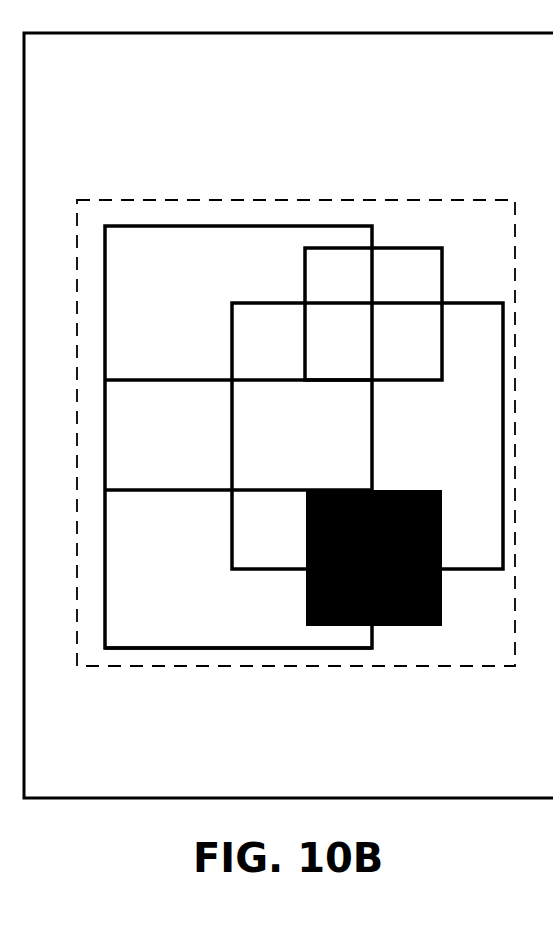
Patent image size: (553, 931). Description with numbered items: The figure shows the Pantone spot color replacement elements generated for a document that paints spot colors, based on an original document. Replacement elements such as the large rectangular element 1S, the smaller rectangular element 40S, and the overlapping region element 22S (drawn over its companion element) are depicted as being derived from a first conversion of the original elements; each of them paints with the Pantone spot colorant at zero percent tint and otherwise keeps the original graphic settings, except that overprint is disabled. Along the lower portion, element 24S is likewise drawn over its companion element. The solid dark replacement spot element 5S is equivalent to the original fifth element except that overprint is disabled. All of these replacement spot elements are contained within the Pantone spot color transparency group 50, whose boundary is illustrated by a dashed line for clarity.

The Pantone 254M transparency group 50 is at (78, 236).
The spot color replacement element 1S is at (104, 238).
The spot color replacement element 40S is at (402, 248).
The spot color replacement element 22S is at (483, 302).
The replacement spot element 5S is at (443, 627).
The spot color replacement element 24S is at (107, 649).